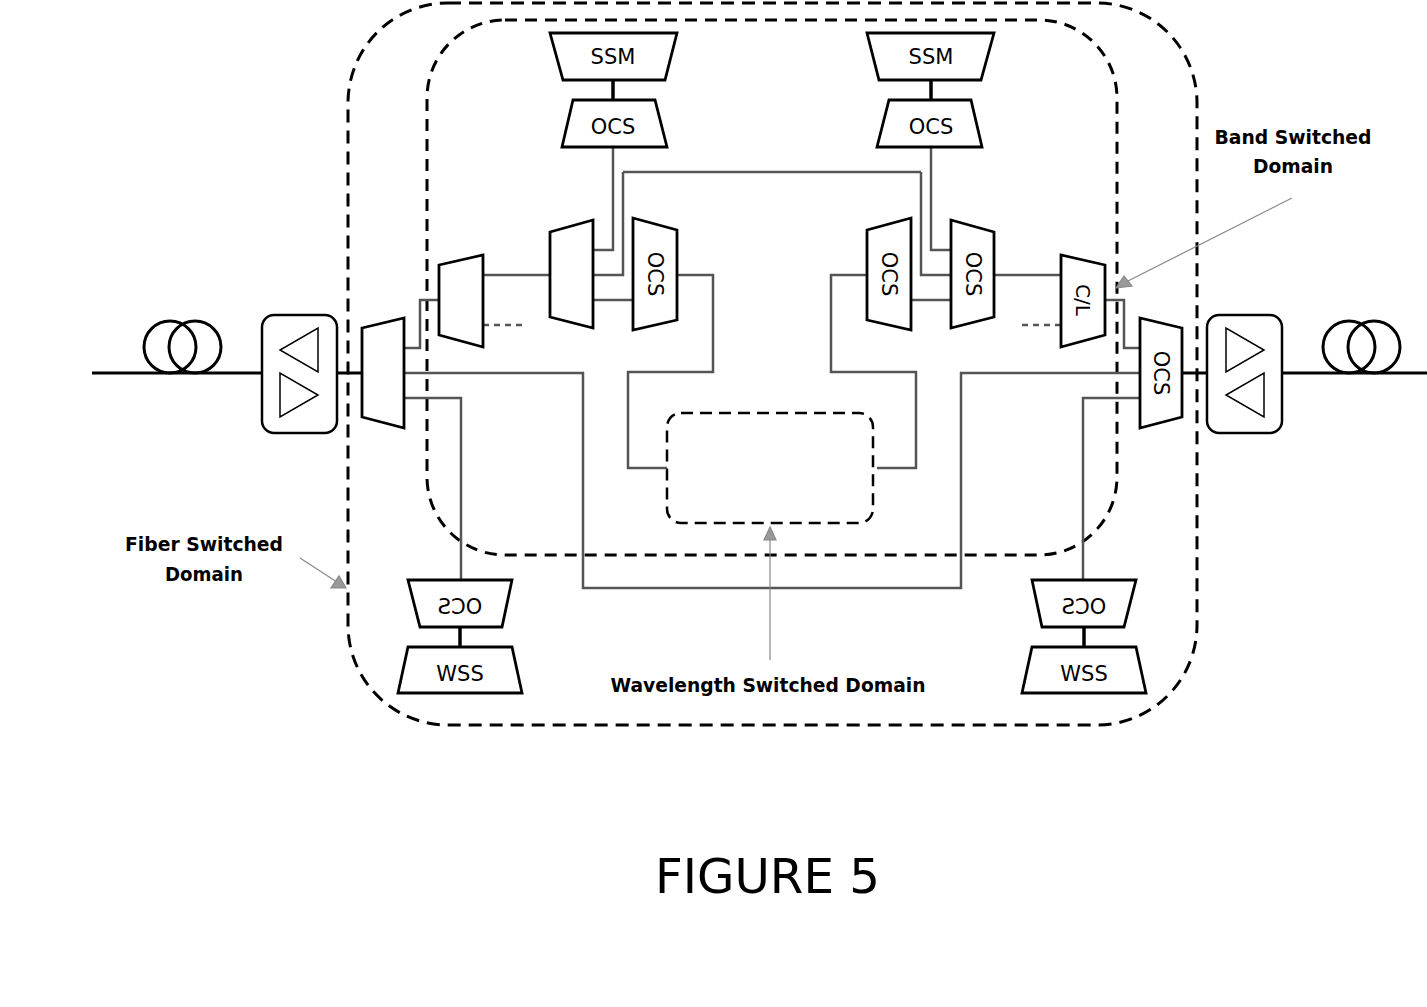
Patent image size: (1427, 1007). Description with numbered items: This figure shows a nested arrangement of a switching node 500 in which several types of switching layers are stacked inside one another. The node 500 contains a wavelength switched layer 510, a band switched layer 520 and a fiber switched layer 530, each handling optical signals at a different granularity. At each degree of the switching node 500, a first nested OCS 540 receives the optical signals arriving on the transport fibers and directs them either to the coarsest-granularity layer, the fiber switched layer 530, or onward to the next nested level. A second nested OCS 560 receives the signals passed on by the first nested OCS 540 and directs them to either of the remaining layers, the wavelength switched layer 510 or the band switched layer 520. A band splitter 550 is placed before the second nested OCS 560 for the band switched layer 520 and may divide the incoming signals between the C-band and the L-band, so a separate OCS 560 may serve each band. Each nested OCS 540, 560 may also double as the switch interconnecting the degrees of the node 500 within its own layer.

The switching node 500 is at (749, 793).
The wavelength switched layer 510 is at (770, 468).
The band switched layer 520 is at (772, 287).
The fiber switched layer 530 is at (772, 364).
The first nested OCS 540 is at (382, 322).
The band splitter 550 is at (463, 255).
The second nested OCS 560 is at (572, 227).